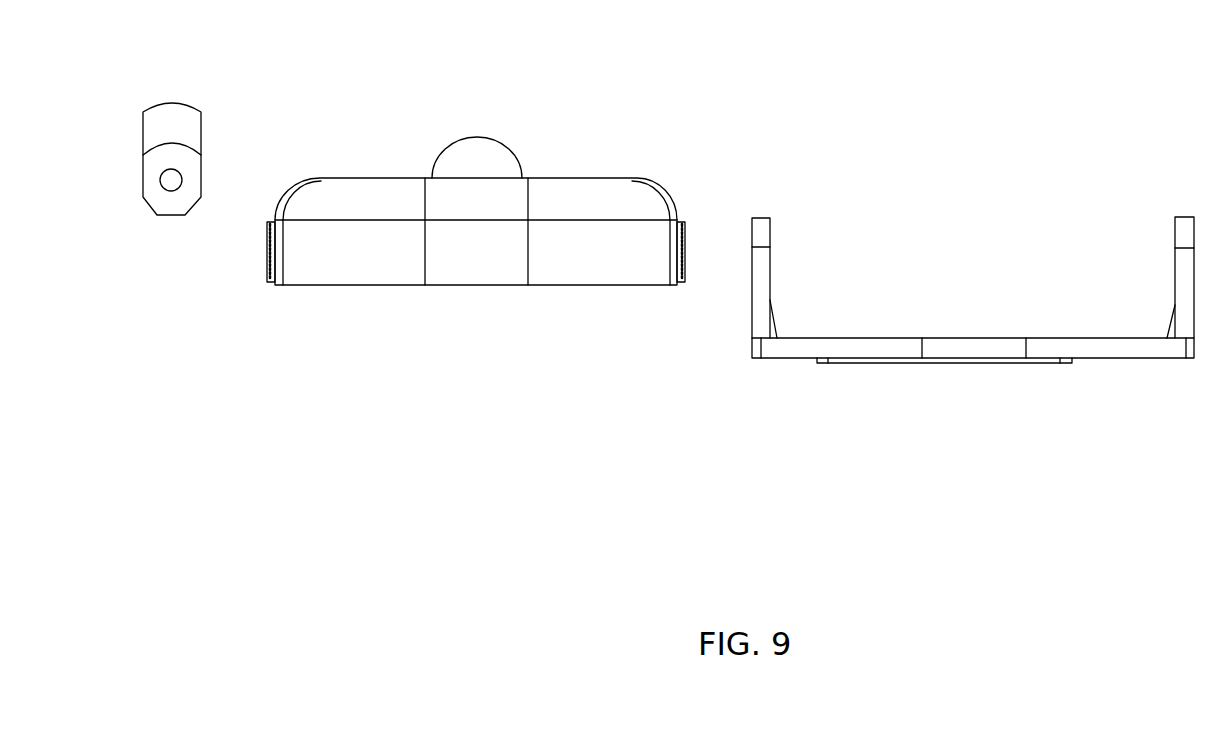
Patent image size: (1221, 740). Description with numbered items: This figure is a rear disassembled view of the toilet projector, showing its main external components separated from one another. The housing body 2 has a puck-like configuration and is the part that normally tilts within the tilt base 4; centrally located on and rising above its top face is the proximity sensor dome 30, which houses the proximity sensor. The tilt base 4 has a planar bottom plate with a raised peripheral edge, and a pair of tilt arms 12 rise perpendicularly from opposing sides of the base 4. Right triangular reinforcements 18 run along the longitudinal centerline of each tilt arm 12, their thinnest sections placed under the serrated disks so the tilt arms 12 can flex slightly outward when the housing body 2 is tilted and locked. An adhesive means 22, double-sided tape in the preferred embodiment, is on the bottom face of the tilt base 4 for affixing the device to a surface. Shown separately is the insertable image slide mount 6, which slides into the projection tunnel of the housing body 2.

The housing body 2 is at (357, 275).
The tilt base 4 is at (788, 355).
The insertable image slide mount 6 is at (202, 112).
The tilt arms 12 is at (765, 265).
The right triangular reinforcements 18 is at (775, 330).
The adhesive means 22 is at (965, 360).
The proximity sensor dome 30 is at (478, 145).